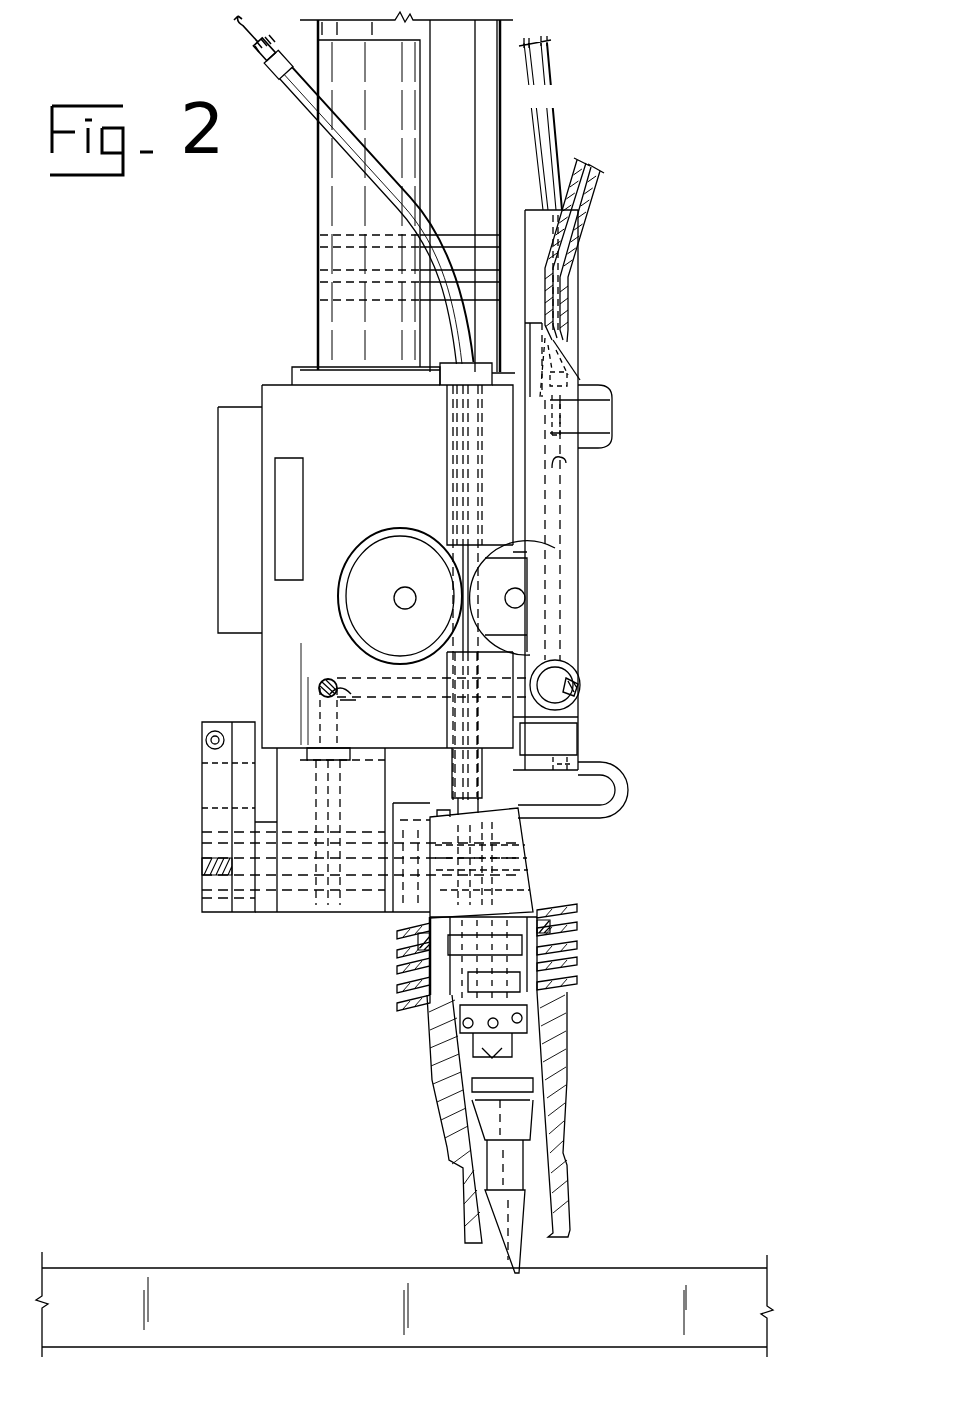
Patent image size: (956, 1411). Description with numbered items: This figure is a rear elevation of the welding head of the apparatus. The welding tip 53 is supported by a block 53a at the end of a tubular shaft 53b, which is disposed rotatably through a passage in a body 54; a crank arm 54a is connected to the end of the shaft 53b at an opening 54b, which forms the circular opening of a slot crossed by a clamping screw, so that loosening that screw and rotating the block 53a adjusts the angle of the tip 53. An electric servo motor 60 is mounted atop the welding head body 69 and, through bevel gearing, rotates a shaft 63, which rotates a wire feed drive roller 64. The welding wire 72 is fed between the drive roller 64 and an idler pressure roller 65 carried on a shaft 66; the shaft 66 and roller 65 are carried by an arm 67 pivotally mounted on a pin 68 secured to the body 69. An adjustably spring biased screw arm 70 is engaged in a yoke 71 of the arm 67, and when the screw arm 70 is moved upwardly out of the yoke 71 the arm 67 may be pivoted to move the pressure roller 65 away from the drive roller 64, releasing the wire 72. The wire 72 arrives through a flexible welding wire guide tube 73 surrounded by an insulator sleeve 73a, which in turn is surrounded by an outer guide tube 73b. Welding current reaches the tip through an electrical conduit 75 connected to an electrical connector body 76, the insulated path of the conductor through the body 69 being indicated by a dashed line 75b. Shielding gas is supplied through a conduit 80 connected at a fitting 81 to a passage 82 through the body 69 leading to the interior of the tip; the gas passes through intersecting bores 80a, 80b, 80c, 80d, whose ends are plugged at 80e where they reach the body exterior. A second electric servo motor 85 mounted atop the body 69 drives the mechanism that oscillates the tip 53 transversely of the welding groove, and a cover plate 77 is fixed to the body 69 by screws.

The welding tip 53 is at (571, 1061).
The block 53a is at (532, 878).
The tubular shaft 53b is at (356, 913).
The body 54 is at (306, 914).
The crank arm 54a is at (200, 785).
The opening 54b is at (216, 906).
The electric servo motor 60 is at (500, 104).
The shaft 63 is at (406, 587).
The wire feed drive roller 64 is at (373, 651).
The idler pressure roller 65 is at (545, 548).
The shaft 66 is at (526, 598).
The arm 67 is at (580, 484).
The pin 68 is at (568, 681).
The welding head body 69 is at (262, 665).
The screw arm 70 is at (614, 416).
The yoke 71 is at (563, 343).
The welding wire 72 is at (238, 24).
The flexible welding wire guide tube 73 is at (258, 54).
The insulator sleeve 73a is at (275, 68).
The outer guide tube 73b is at (282, 82).
The electrical conduit 75 is at (556, 140).
The dashed line 75b is at (556, 177).
The electrical connector body 76 is at (583, 745).
The cover plate 77 is at (218, 520).
The conduit 80 is at (595, 192).
The bore 80a is at (563, 562).
The bore 80b is at (387, 698).
The bore 80c is at (324, 681).
The bore 80d is at (318, 743).
The plug 80e is at (579, 691).
The fitting 81 is at (592, 370).
The passage 82 is at (566, 462).
The electric servo motor 85 is at (420, 155).